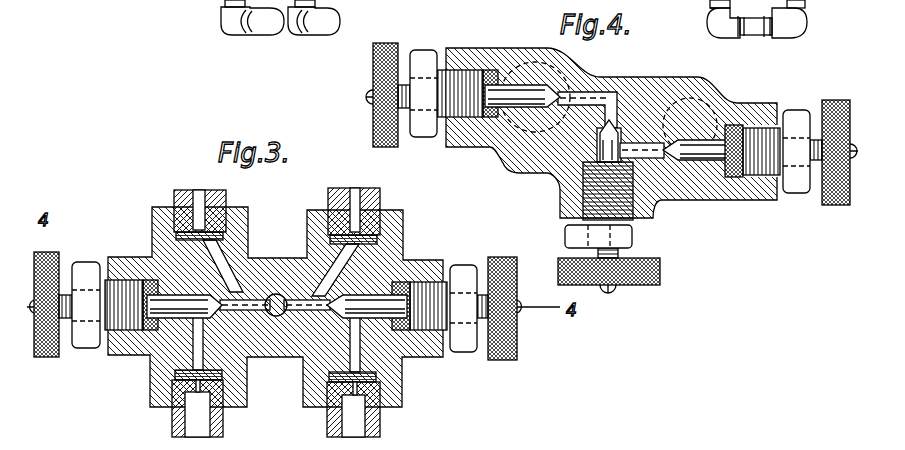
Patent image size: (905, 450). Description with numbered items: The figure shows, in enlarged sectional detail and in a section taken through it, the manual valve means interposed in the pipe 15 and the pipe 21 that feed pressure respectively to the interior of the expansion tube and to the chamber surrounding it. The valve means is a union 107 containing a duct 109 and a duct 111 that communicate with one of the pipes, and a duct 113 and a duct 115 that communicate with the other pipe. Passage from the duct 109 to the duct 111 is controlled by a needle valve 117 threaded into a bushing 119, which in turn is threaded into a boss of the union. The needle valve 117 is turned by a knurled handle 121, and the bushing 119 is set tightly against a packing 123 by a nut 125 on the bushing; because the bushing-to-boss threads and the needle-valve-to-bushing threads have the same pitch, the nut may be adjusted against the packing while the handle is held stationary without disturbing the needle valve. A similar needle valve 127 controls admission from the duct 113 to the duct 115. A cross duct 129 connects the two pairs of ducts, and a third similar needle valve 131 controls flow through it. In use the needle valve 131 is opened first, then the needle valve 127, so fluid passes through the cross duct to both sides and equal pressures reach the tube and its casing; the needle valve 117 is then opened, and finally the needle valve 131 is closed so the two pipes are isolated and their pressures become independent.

In FIG. 3, the pipe 15 is at (218, 196).
In FIG. 3, the pipe 21 is at (376, 201).
In FIG. 3, the union 107 is at (390, 233).
In FIG. 4, the union 107 is at (715, 100).
In FIG. 3, the duct 109 is at (196, 356).
In FIG. 4, the duct 109 is at (552, 56).
In FIG. 3, the duct 111 is at (213, 258).
In FIG. 3, the duct 113 is at (354, 360).
In FIG. 4, the duct 113 is at (692, 95).
In FIG. 3, the duct 115 is at (332, 256).
In FIG. 3, the needle valve 117 is at (176, 310).
In FIG. 4, the needle valve 117 is at (512, 88).
In FIG. 3, the bushing 119 is at (120, 327).
In FIG. 4, the bushing 119 is at (455, 112).
In FIG. 3, the knurled handle 121 is at (50, 262).
In FIG. 4, the knurled handle 121 is at (390, 46).
In FIG. 3, the packing 123 is at (147, 280).
In FIG. 3, the nut 125 is at (86, 266).
In FIG. 4, the nut 125 is at (421, 62).
In FIG. 3, the needle valve 127 is at (375, 300).
In FIG. 4, the needle valve 127 is at (703, 152).
In FIG. 3, the cross duct 129 is at (287, 287).
In FIG. 4, the cross duct 129 is at (637, 148).
In FIG. 3, the needle valve 131 is at (276, 316).
In FIG. 4, the needle valve 131 is at (600, 152).